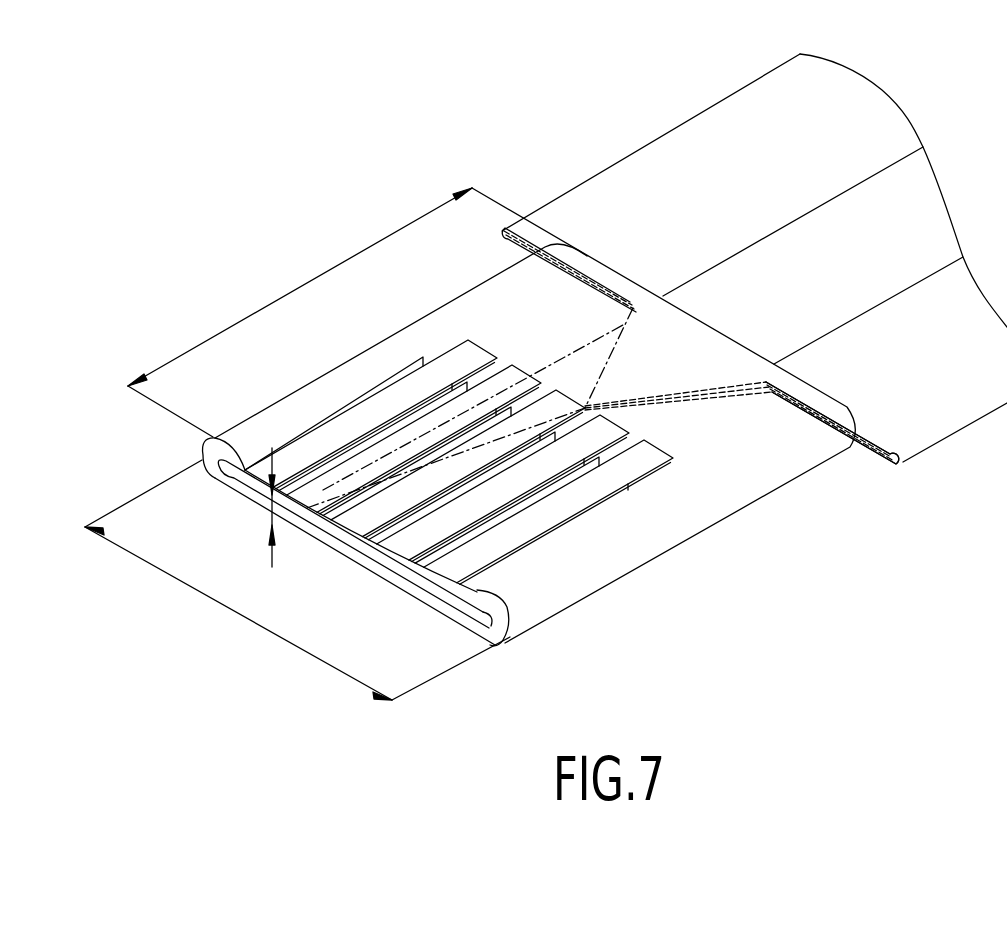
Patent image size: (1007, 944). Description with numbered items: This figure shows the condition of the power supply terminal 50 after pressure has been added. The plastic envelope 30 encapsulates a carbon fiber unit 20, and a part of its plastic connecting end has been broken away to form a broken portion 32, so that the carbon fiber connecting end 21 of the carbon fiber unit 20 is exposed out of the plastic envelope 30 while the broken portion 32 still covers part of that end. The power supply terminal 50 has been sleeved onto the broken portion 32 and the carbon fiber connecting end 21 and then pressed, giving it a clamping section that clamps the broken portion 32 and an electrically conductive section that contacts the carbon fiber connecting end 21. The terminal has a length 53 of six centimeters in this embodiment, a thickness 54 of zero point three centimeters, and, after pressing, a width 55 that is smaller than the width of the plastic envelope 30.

The carbon fiber unit 20 is at (579, 356).
The carbon fiber connecting end 21 is at (693, 405).
The plastic envelope 30 is at (626, 154).
The broken portion 32 is at (648, 383).
The power supply terminal 50 is at (620, 578).
The length 53 is at (188, 353).
The thickness 54 is at (270, 507).
The width 55 is at (143, 560).